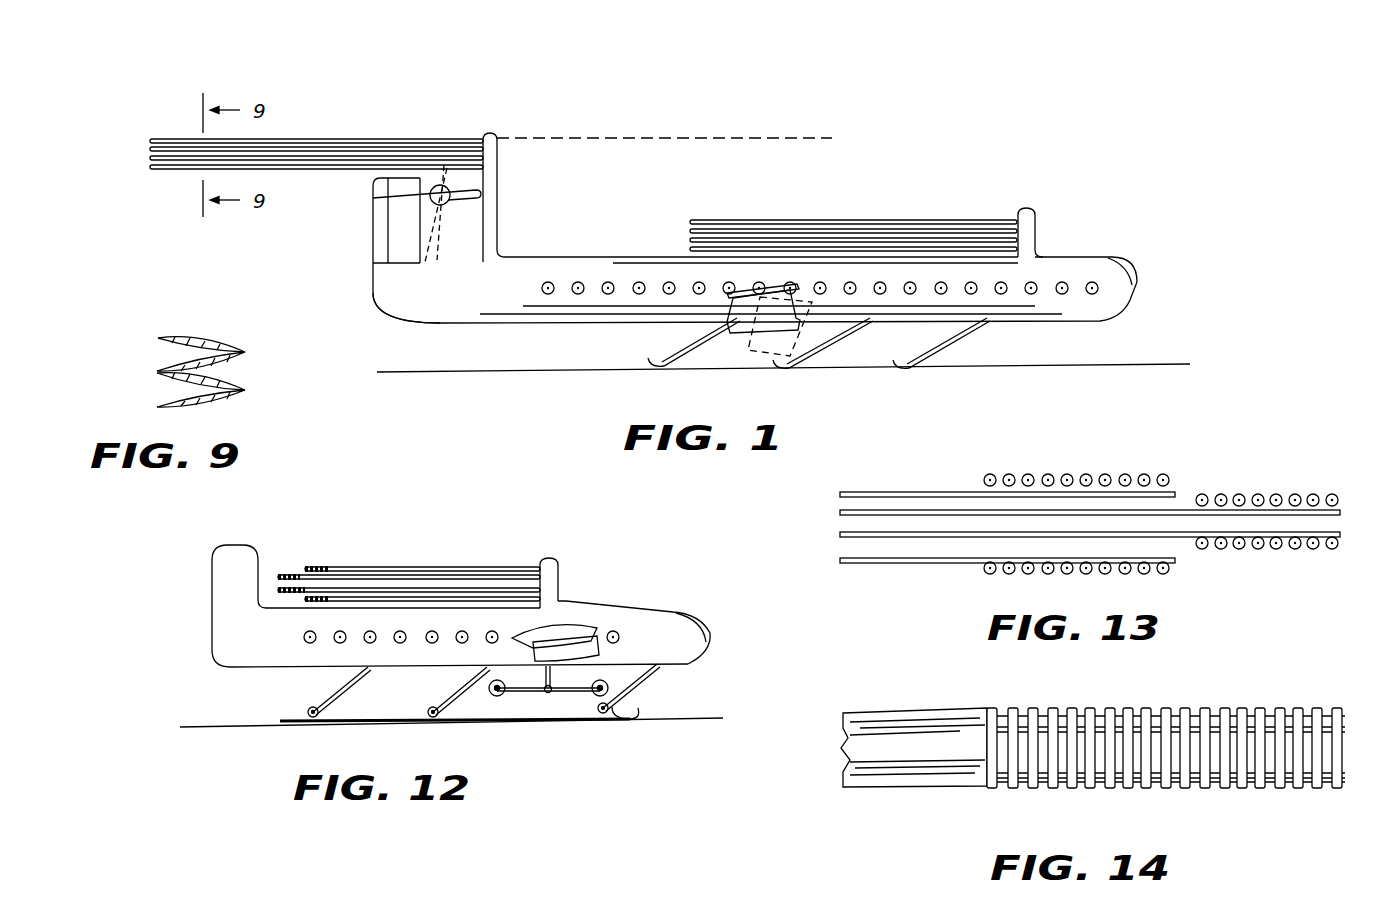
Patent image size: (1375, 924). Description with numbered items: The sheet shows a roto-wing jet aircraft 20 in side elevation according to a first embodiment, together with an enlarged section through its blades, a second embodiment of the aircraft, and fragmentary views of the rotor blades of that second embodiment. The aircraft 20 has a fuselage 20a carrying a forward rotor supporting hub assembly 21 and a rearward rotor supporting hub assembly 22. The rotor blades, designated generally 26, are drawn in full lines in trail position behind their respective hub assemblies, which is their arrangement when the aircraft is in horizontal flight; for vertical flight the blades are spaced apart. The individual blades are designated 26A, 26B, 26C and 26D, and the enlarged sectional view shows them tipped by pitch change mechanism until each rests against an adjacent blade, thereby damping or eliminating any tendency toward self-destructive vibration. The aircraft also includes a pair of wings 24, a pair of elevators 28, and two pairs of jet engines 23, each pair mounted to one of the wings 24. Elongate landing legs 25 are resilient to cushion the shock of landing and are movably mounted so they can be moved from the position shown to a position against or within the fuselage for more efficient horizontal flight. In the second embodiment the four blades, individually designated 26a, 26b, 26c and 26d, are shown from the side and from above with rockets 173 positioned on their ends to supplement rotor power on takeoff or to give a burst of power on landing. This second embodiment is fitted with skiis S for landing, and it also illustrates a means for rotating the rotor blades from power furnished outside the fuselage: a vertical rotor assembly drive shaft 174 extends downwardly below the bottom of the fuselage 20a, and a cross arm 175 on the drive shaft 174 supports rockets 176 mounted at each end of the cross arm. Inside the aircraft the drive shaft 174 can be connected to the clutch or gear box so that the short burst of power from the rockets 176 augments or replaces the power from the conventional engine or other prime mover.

In FIG. 1, the roto-wing jet aircraft 20 is at (583, 327).
In FIG. 1, the fuselage 20a is at (457, 323).
In FIG. 12, the fuselage 20a is at (703, 662).
In FIG. 1, the forward rotor supporting hub assembly 21 is at (1040, 207).
In FIG. 12, the forward rotor supporting hub assembly 21 is at (553, 563).
In FIG. 1, the rearward rotor supporting hub assembly 22 is at (500, 135).
In FIG. 1, the jet engines 23 is at (741, 333).
In FIG. 1, the wings 24 is at (768, 292).
In FIG. 1, the landing legs 25 is at (677, 360).
In FIG. 1, the rotor blades 26 is at (320, 137).
In FIG. 1, the rotor blade 26A is at (359, 140).
In FIG. 9, the rotor blade 26A is at (202, 336).
In FIG. 1, the rotor blade 26B is at (390, 148).
In FIG. 9, the rotor blade 26B is at (180, 358).
In FIG. 1, the rotor blade 26C is at (405, 157).
In FIG. 9, the rotor blade 26C is at (185, 388).
In FIG. 1, the rotor blade 26D is at (427, 166).
In FIG. 9, the rotor blade 26D is at (222, 401).
In FIG. 12, the rotor blade 26a is at (420, 567).
In FIG. 13, the rotor blade 26a is at (898, 491).
In FIG. 14, the rotor blade 26a is at (910, 720).
In FIG. 12, the rotor blade 26b is at (348, 577).
In FIG. 13, the rotor blade 26b is at (956, 509).
In FIG. 14, the rotor blade 26b is at (1188, 715).
In FIG. 12, the rotor blade 26c is at (303, 592).
In FIG. 13, the rotor blade 26c is at (990, 538).
In FIG. 12, the rotor blade 26d is at (357, 601).
In FIG. 13, the rotor blade 26d is at (908, 564).
In FIG. 1, the elevators 28 is at (400, 200).
In FIG. 12, the bead weights 173 is at (290, 575).
In FIG. 13, the bead weights 173 is at (1125, 475).
In FIG. 14, the bead weights 173 is at (1110, 708).
In FIG. 12, the vertical rotor assembly drive shaft 174 is at (552, 680).
In FIG. 12, the cross arm 175 is at (532, 692).
In FIG. 12, the rockets 176 is at (497, 697).
In FIG. 12, the skiis S is at (345, 722).